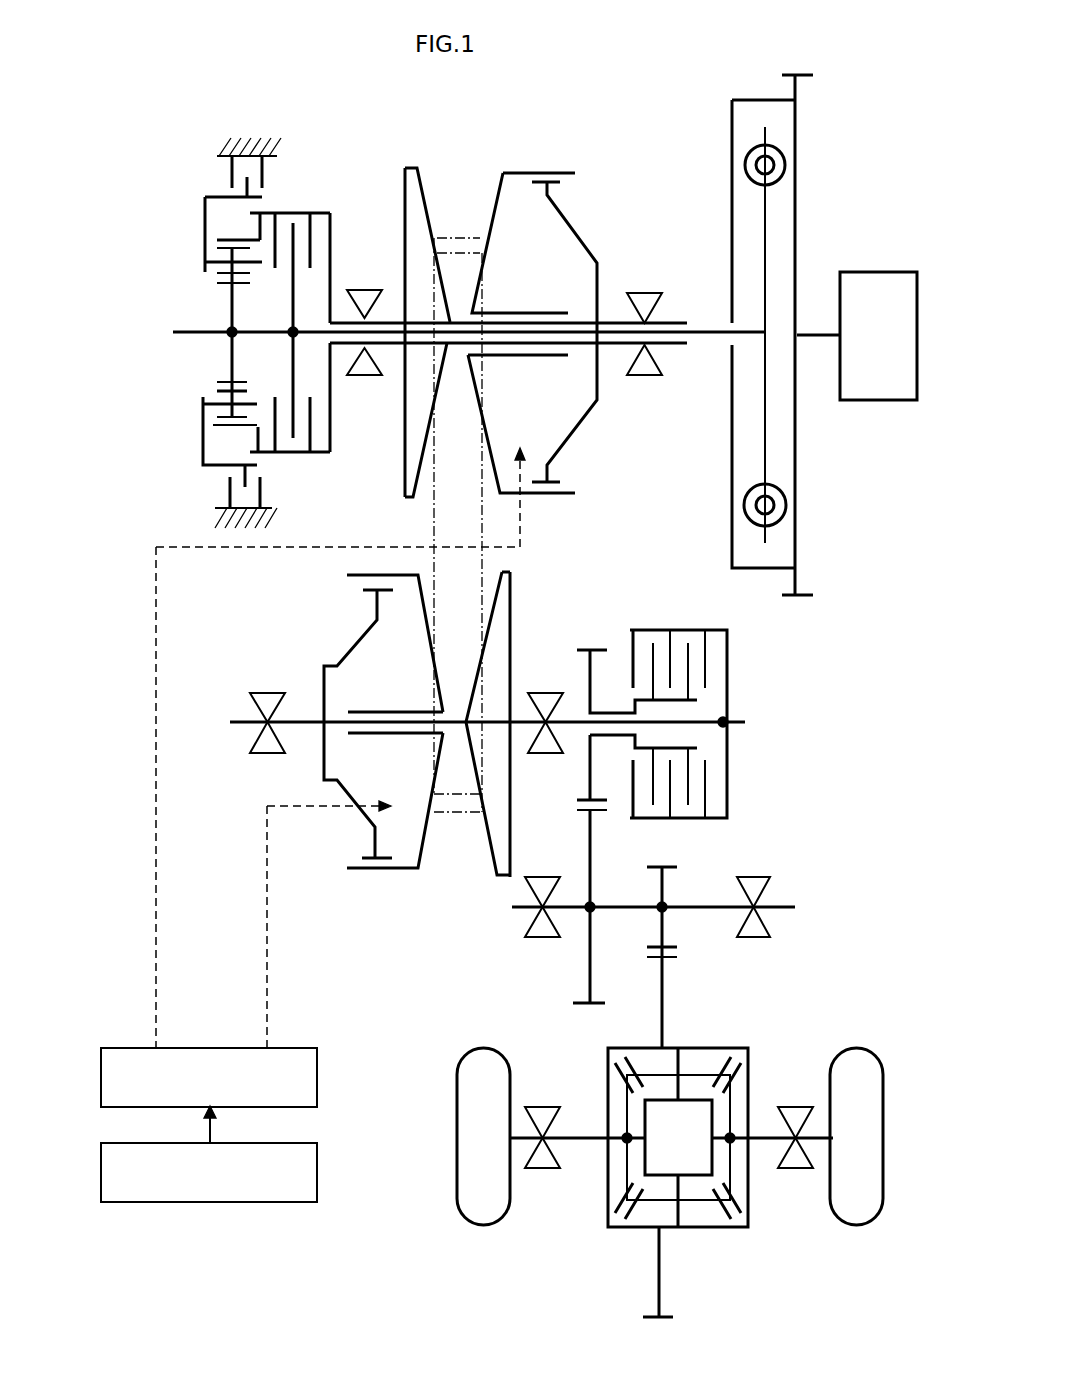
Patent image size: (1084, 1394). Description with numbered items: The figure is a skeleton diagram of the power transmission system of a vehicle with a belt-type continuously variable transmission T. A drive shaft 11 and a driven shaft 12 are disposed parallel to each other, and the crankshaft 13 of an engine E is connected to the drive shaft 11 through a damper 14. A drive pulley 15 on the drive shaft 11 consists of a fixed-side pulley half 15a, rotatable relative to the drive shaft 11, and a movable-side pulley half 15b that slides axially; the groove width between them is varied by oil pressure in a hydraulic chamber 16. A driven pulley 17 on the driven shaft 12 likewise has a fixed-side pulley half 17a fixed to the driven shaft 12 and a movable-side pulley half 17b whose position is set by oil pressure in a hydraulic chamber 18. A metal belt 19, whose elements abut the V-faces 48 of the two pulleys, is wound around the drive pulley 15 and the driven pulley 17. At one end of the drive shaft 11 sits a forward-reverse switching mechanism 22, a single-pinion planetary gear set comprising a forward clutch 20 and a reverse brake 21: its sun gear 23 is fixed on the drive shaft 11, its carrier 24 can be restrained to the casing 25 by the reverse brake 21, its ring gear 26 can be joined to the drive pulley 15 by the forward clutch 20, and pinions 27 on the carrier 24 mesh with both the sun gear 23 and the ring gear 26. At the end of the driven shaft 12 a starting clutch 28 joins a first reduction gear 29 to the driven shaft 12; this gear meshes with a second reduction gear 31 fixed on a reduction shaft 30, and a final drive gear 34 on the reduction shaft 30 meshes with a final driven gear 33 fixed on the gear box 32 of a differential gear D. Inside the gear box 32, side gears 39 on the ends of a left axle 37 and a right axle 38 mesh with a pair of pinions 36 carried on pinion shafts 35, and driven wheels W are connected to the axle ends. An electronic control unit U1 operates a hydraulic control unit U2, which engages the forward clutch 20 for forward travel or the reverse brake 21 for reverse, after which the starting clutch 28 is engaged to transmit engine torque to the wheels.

The drive shaft 11 is at (608, 330).
The driven shaft 12 is at (578, 720).
The crankshaft 13 is at (813, 340).
The damper 14 is at (808, 195).
The drive pulley 15 is at (490, 290).
The fixed-side pulley half 15a is at (425, 193).
The movable-side pulley half 15b is at (493, 193).
The hydraulic chamber 16 is at (551, 281).
The driven pulley 17 is at (428, 772).
The fixed-side pulley half 17a is at (490, 857).
The movable-side pulley half 17b is at (422, 858).
The hydraulic chamber 18 is at (409, 677).
The metal belt 19 is at (434, 525).
The forward clutch 20 is at (293, 454).
The reverse brake 21 is at (218, 489).
The forward-reverse switching mechanism 22 is at (197, 261).
The sun gear 23 is at (218, 284).
The carrier 24 is at (203, 437).
The casing 25 is at (245, 136).
The ring gear 26 is at (227, 238).
The pinions 27 is at (247, 276).
The starting clutch 28 is at (665, 629).
The first reduction gear 29 is at (587, 648).
The reduction shaft 30 is at (612, 910).
The second reduction gear 31 is at (580, 1005).
The gear box 32 is at (715, 1048).
The final driven gear 33 is at (670, 958).
The final drive gear 34 is at (670, 865).
The pinion shafts 35 is at (693, 1048).
The pinions 36 is at (637, 1048).
The left axle 37 is at (578, 1140).
The right axle 38 is at (775, 1140).
The side gears 39 is at (615, 1065).
The V-faces 48 is at (483, 427).
The engine E is at (887, 349).
The belt-type continuously variable transmission T is at (562, 534).
The differential gear D is at (754, 1049).
The driven wheels W is at (485, 1225).
The electronic control unit U1 is at (318, 1165).
The hydraulic control unit U2 is at (318, 1072).